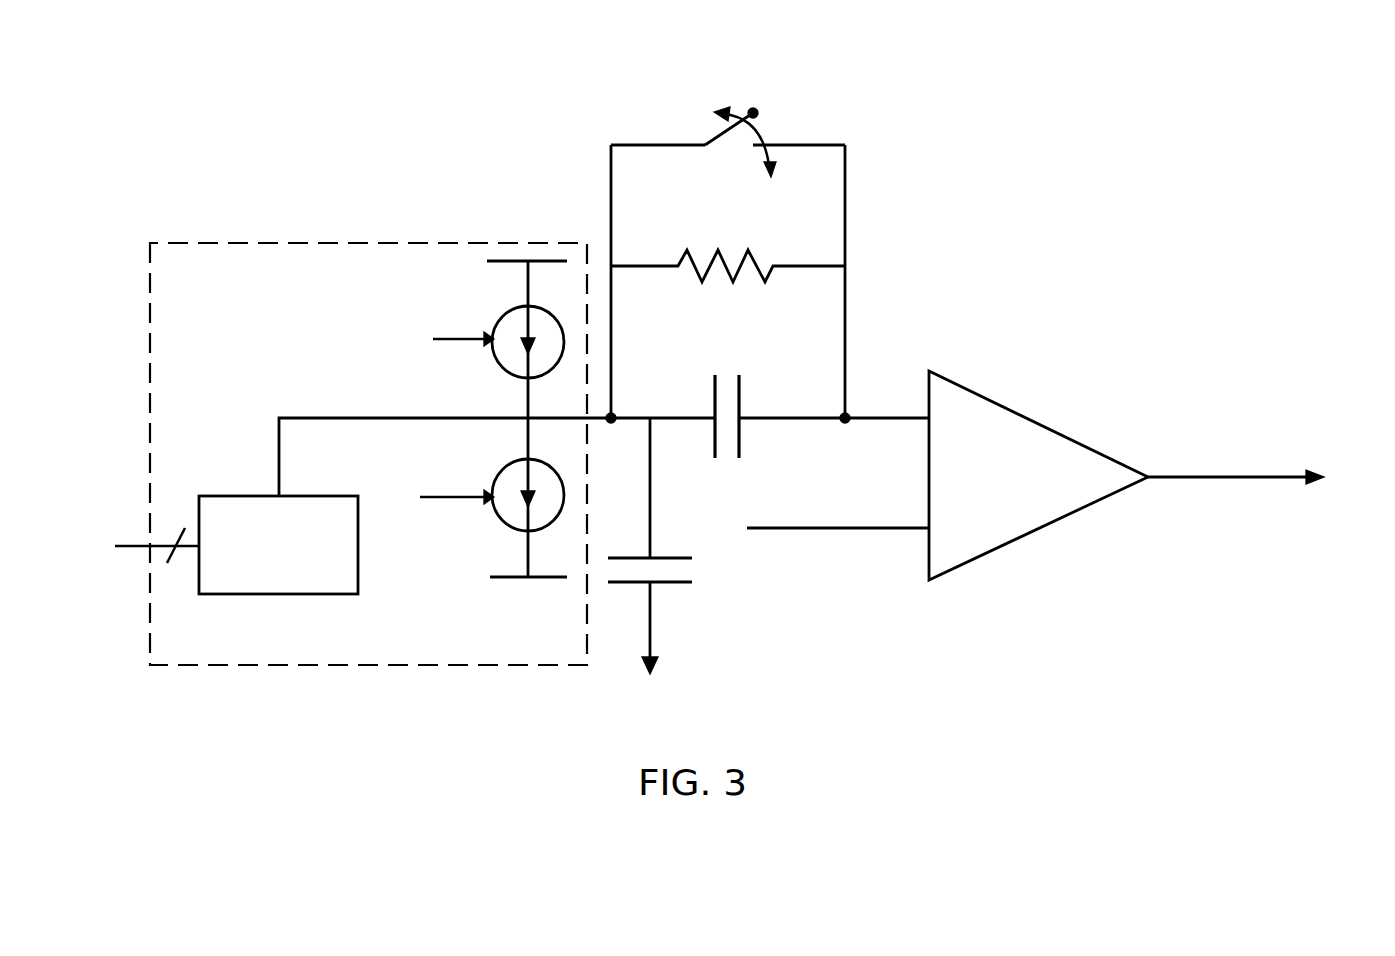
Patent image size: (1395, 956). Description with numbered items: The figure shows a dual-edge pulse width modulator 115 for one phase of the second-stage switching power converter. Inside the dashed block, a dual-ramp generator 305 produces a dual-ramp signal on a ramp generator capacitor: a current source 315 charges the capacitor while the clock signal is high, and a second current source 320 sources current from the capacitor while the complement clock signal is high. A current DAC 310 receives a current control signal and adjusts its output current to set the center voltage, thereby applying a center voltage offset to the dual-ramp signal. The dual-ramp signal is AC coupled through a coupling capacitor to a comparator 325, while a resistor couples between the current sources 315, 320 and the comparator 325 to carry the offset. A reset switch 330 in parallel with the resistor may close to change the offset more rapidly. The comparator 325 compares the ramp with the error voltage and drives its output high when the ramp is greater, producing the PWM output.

The dual-edge pulse width modulator 115 is at (1057, 24).
The dual-ramp generator 305 is at (370, 667).
The current DAC 310 is at (335, 594).
The current source 315 is at (503, 363).
The current source 320 is at (505, 520).
The comparator 325 is at (1052, 427).
The reset switch 330 is at (772, 112).